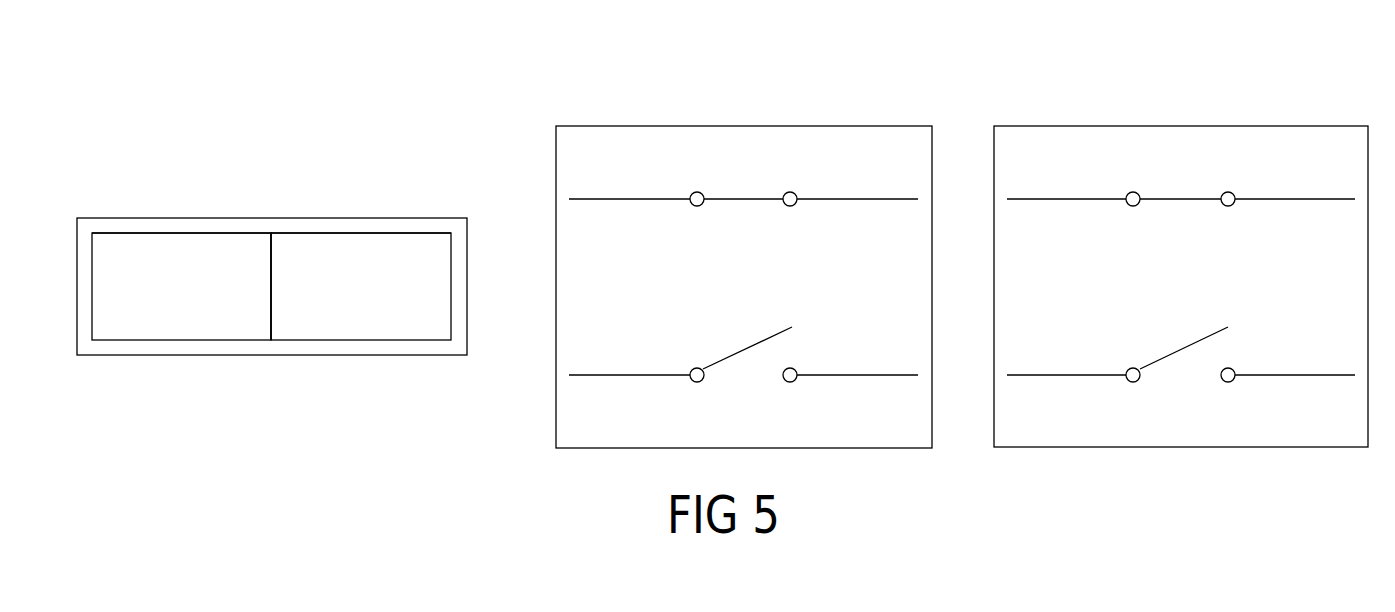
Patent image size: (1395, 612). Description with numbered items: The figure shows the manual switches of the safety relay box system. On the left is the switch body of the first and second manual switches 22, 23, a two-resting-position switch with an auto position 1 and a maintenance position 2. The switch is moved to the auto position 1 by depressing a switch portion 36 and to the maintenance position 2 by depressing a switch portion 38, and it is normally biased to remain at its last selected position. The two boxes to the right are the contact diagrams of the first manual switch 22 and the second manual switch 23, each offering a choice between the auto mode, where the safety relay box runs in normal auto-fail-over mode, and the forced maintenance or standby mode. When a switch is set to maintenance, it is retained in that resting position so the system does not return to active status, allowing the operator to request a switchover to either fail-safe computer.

The auto position 1 is at (181, 211).
The maintenance position 2 is at (361, 211).
The first manual switch 22 is at (752, 102).
The second manual switch 23 is at (1186, 93).
The switch portion 36 is at (168, 332).
The switch portion 38 is at (370, 325).